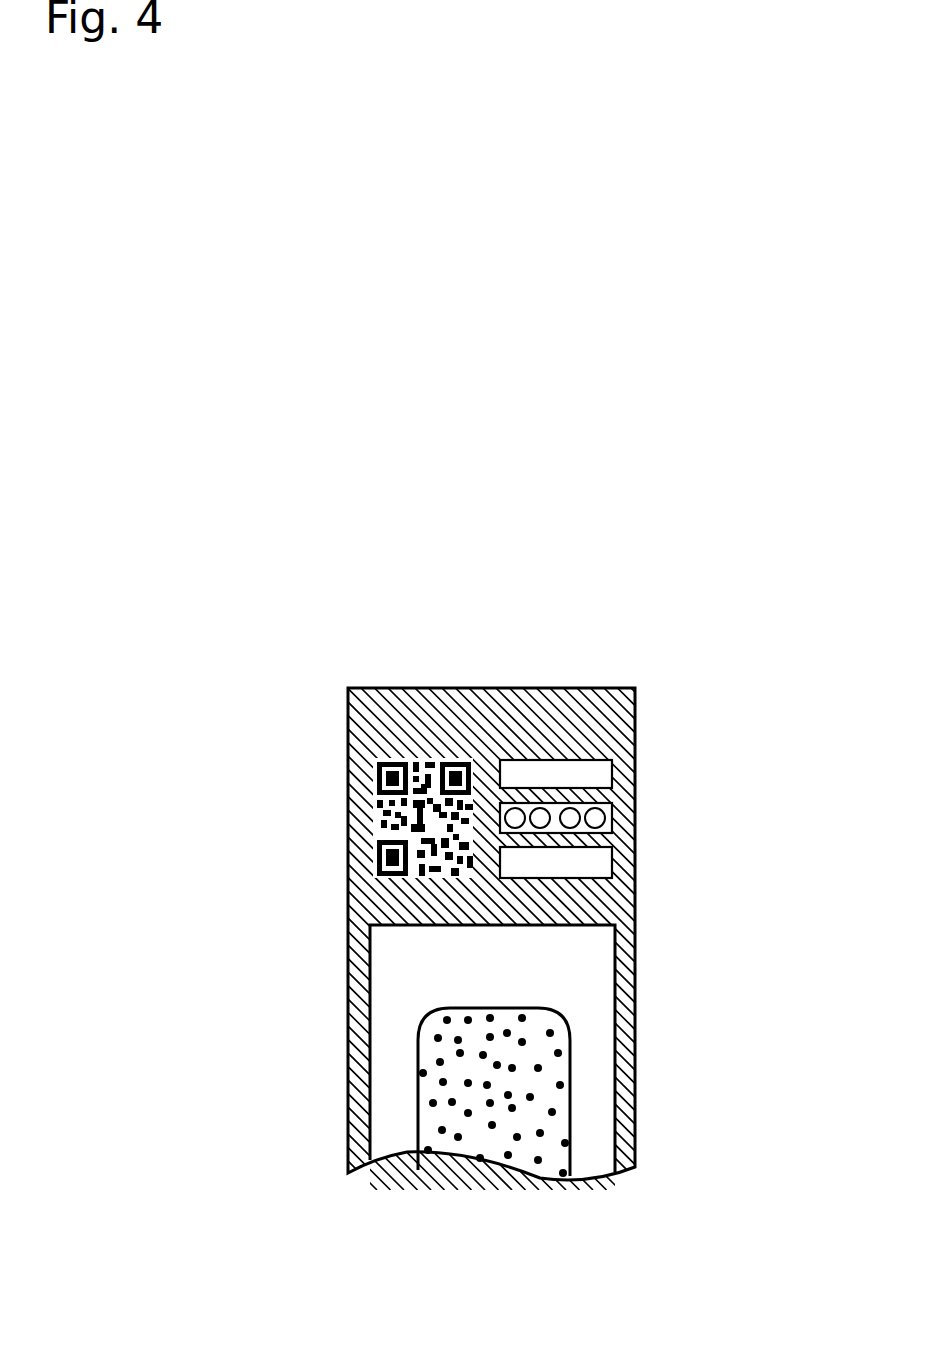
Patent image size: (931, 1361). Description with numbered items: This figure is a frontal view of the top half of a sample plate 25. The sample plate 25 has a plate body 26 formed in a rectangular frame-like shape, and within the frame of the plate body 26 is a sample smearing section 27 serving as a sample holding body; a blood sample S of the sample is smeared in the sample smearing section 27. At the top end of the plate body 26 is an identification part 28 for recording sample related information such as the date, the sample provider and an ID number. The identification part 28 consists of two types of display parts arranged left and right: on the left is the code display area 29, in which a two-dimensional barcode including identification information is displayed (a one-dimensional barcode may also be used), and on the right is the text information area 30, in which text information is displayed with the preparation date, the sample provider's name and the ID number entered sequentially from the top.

The sample plate 25 is at (658, 715).
The plate body 26 is at (357, 1028).
The sample smearing section 27 is at (572, 1050).
The identification part 28 is at (580, 597).
The code display area 29 is at (422, 748).
The text information area 30 is at (553, 750).
The blood sample S is at (467, 1152).